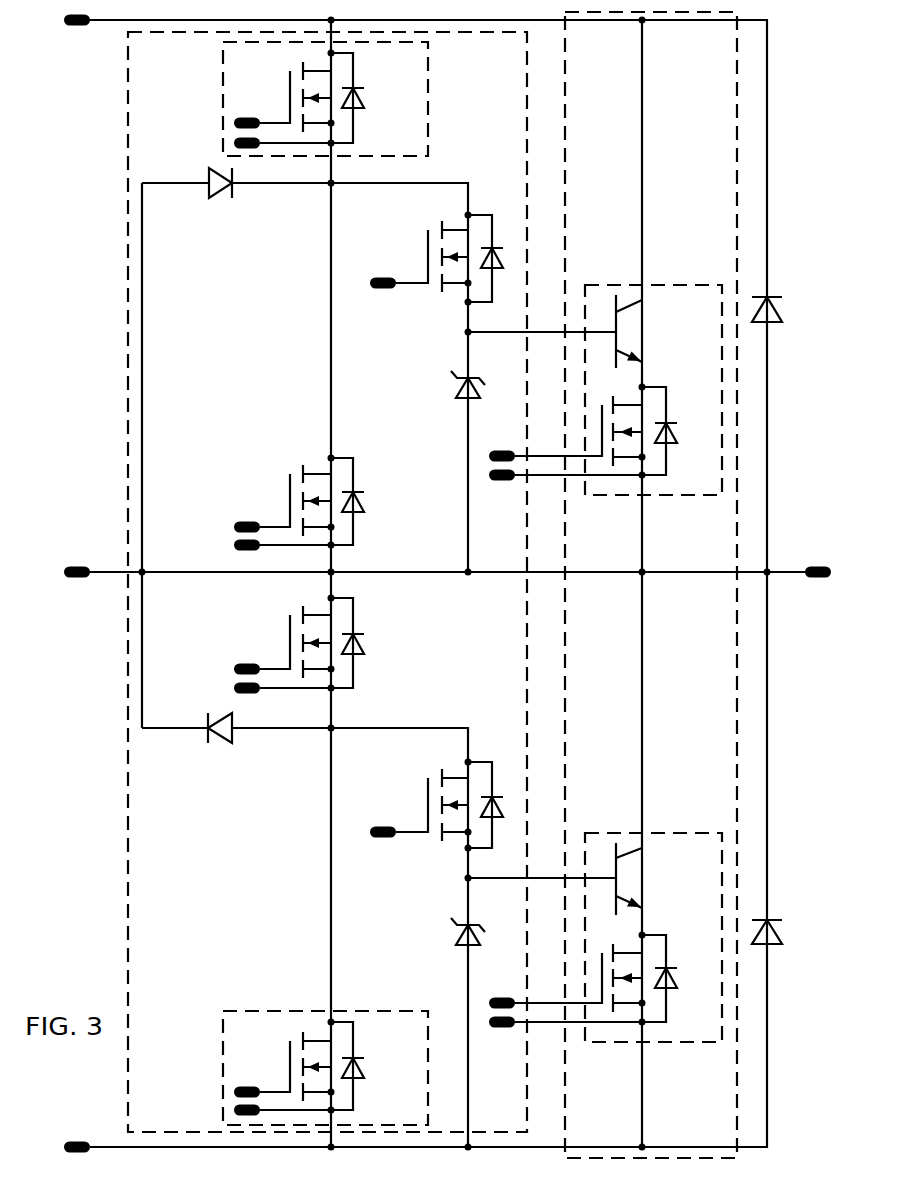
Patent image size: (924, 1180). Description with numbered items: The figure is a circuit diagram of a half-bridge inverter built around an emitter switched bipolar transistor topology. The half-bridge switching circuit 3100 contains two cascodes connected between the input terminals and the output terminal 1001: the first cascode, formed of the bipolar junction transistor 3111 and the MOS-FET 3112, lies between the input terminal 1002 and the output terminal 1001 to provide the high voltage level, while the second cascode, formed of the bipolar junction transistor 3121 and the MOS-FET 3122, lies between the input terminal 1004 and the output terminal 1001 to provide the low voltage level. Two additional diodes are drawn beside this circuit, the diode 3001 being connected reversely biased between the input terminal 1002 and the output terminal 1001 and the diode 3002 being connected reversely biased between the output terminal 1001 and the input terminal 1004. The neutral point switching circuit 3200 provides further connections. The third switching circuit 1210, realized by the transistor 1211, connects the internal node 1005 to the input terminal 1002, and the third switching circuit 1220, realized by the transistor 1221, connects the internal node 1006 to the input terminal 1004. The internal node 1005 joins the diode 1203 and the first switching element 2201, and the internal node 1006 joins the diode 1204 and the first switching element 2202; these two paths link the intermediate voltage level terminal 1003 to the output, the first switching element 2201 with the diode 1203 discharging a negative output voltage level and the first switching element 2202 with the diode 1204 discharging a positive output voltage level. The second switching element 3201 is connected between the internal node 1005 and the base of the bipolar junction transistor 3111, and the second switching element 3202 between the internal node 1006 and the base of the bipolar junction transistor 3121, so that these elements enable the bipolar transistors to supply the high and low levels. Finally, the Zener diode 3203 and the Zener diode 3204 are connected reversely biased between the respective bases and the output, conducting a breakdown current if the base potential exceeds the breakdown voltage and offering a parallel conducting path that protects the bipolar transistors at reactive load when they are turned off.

The output terminal 1001 is at (818, 580).
The input terminal 1002 is at (77, 28).
The intermediate voltage level terminal 1003 is at (78, 580).
The input terminal 1004 is at (77, 1139).
The internal node 1005 is at (327, 190).
The internal node 1006 is at (327, 735).
The diode 1203 is at (210, 190).
The diode 1204 is at (205, 735).
The third switching circuit 1210 is at (223, 66).
The transistor 1211 is at (355, 68).
The third switching circuit 1220 is at (223, 1100).
The transistor 1221 is at (355, 1098).
The first switching element 2201 is at (355, 477).
The first switching element 2202 is at (355, 672).
The diode 3001 is at (770, 325).
The diode 3002 is at (770, 945).
The half-bridge switching circuit 3100 is at (737, 68).
The bipolar junction transistor 3111 is at (640, 323).
The MOS-FET 3112 is at (667, 405).
The bipolar junction transistor 3121 is at (640, 870).
The MOS-FET 3122 is at (667, 952).
The neutral point switching circuit 3200 is at (128, 112).
The second switching element 3201 is at (436, 290).
The second switching element 3202 is at (436, 840).
The Zener diode 3203 is at (456, 390).
The Zener diode 3204 is at (456, 937).